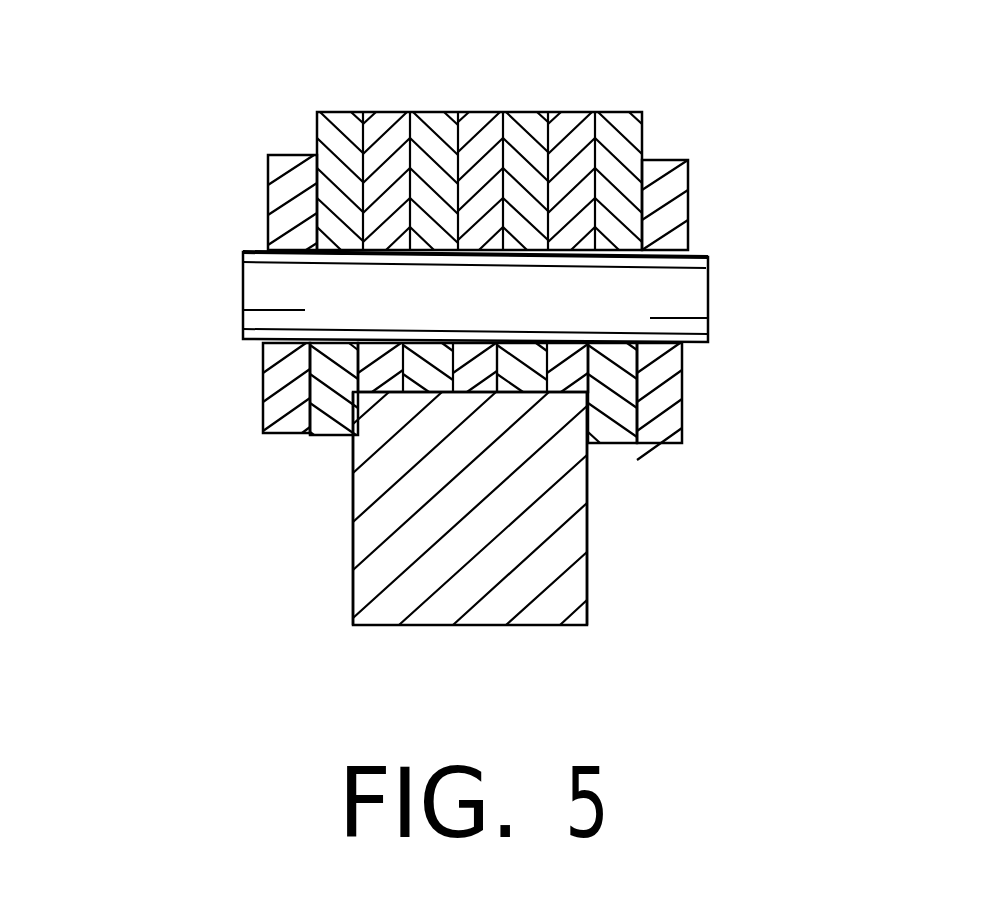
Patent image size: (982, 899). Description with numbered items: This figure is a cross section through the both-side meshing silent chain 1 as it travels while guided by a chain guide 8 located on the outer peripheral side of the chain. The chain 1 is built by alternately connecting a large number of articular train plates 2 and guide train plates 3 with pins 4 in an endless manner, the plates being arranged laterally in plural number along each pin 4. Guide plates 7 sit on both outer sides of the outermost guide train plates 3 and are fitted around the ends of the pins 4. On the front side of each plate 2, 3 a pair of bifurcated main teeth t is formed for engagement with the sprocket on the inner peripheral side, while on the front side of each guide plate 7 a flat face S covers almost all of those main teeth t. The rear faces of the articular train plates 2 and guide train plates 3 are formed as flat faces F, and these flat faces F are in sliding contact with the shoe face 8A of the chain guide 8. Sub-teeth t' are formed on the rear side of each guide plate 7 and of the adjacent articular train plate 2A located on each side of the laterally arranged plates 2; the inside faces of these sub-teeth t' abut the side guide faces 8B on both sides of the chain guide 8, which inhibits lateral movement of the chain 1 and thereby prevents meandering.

The chain 1 is at (222, 211).
The articular train plate 2A is at (332, 112).
The articular train plates 2 is at (432, 112).
The guide train plates 3 is at (390, 112).
The main teeth t is at (514, 125).
The flat face S is at (288, 155).
The pins 4 is at (695, 296).
The guide plates 7 is at (262, 390).
The sub-teeth t' is at (469, 435).
The chain guide 8 is at (459, 598).
The shoe face 8A is at (455, 392).
The hub side surfaces 8B is at (353, 590).
The flat faces F is at (515, 392).